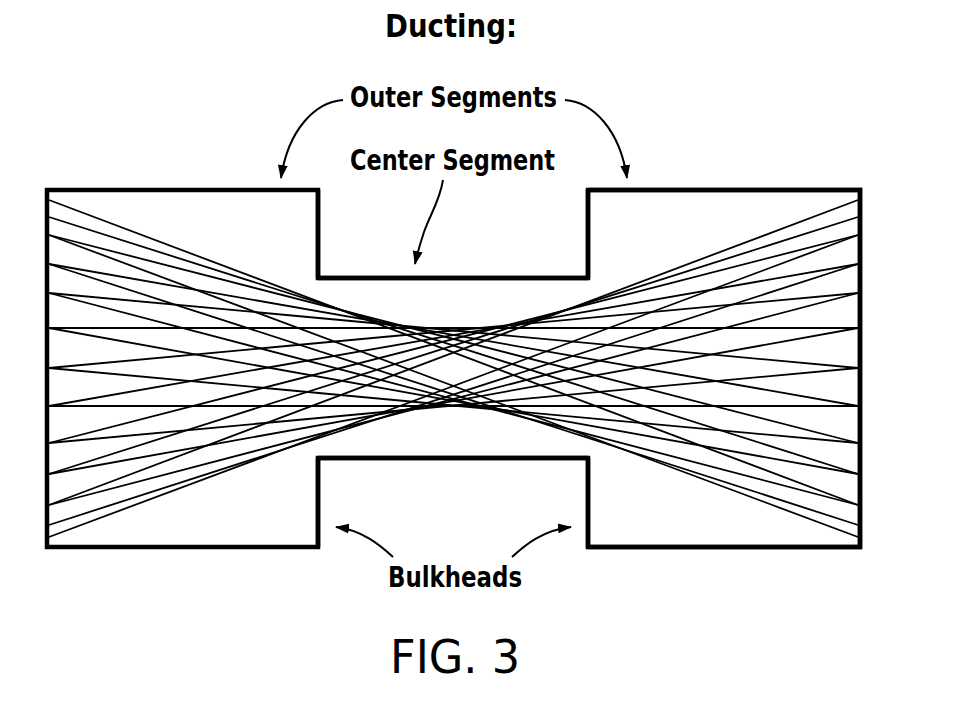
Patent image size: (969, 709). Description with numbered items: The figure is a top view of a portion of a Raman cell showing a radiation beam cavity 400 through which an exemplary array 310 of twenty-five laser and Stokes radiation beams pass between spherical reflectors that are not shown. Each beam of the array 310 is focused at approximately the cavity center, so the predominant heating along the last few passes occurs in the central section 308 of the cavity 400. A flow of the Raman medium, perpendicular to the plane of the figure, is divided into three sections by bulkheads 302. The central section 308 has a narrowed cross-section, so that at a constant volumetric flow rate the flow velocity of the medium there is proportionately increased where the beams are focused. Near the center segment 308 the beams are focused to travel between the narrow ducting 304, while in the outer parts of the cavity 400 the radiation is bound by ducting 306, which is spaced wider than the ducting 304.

The bulkheads 302 is at (322, 248).
The ducting 304 is at (521, 278).
The ducting 306 is at (143, 190).
The central section 308 is at (475, 317).
The array of beams 310 is at (664, 480).
The radiation beam cavity 400 is at (651, 220).